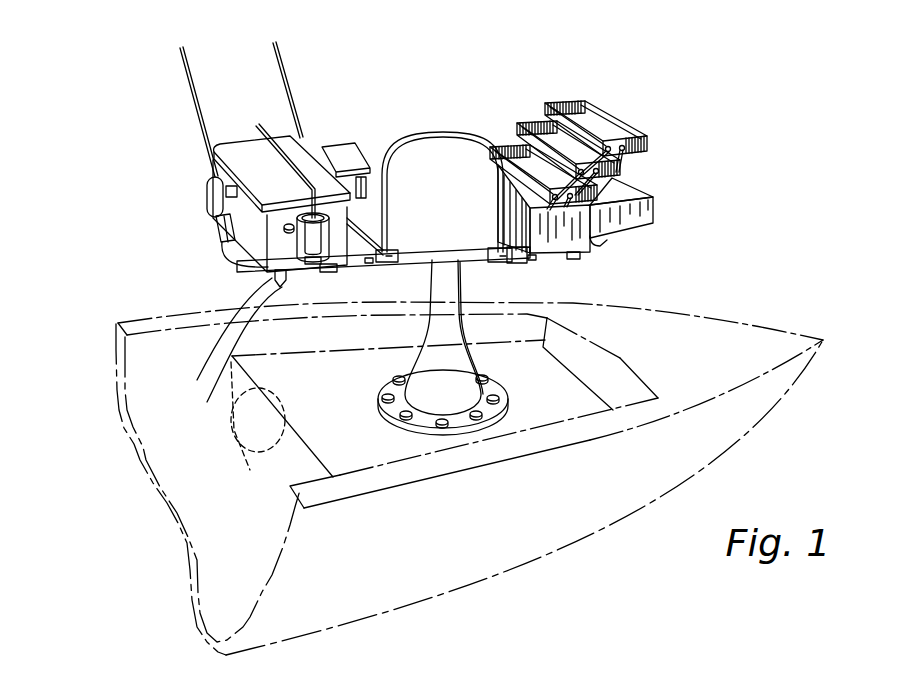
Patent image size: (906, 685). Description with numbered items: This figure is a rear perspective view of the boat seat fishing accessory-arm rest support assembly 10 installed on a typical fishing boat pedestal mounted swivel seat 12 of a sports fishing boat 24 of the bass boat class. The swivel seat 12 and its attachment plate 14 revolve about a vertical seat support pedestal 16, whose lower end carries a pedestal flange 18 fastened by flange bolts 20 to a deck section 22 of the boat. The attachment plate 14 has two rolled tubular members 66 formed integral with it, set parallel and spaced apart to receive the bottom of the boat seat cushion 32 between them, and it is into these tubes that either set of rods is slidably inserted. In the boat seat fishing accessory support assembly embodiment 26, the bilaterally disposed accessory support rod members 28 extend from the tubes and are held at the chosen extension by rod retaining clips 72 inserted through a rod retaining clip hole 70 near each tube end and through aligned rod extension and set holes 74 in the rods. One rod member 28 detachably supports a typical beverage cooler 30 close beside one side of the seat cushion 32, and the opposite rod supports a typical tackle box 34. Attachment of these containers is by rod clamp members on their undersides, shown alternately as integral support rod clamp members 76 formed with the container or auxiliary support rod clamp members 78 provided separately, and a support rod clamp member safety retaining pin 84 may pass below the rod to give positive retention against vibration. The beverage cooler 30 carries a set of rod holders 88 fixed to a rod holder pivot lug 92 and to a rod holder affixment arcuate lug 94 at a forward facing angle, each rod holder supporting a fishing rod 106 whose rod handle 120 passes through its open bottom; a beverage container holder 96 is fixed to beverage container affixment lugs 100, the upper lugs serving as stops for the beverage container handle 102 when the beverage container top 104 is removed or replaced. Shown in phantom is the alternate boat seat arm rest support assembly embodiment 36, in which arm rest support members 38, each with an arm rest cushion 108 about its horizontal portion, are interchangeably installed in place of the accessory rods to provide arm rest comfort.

The boat seat fishing accessory-arm rest support assembly 10 is at (470, 92).
The fishing boat pedestal mounted swivel seat 12 is at (344, 318).
The attachment plate 14 is at (458, 257).
The vertical seat support pedestal 16 is at (460, 328).
The pedestal flange 18 is at (408, 428).
The flange bolts 20 is at (392, 380).
The deck section 22 is at (232, 450).
The sports fishing boat 24 is at (652, 295).
The boat seat fishing accessory support assembly embodiment 26 is at (180, 222).
The accessory support rod members 28 is at (233, 262).
The beverage cooler 30 is at (265, 240).
The boat seat cushion 32 is at (391, 150).
The tackle box 34 is at (615, 180).
The boat seat arm rest support assembly embodiment 36 is at (492, 128).
The arm rest support members 38 is at (352, 203).
The rolled tubular members 66 is at (413, 258).
The rod retaining clip hole 70 is at (386, 256).
The rod retaining clips 72 is at (392, 260).
The rod extension and set holes 74 is at (371, 263).
The integral support rod clamp members 76 is at (327, 271).
The auxiliary support rod clamp members 78 is at (589, 297).
The support rod clamp member safety retaining pin 84 is at (545, 288).
The rod holders 88 is at (206, 195).
The rod holder pivot lug 92 is at (234, 229).
The rod holder affixment arcuate lug 94 is at (227, 149).
The beverage container holder 96 is at (288, 277).
The beverage container affixment lugs 100 is at (311, 216).
The beverage container handle 102 is at (265, 135).
The beverage container top 104 is at (236, 147).
The fishing rods 106 is at (181, 73).
The arm rest cushion 108 is at (327, 140).
The rod handle 120 is at (215, 240).